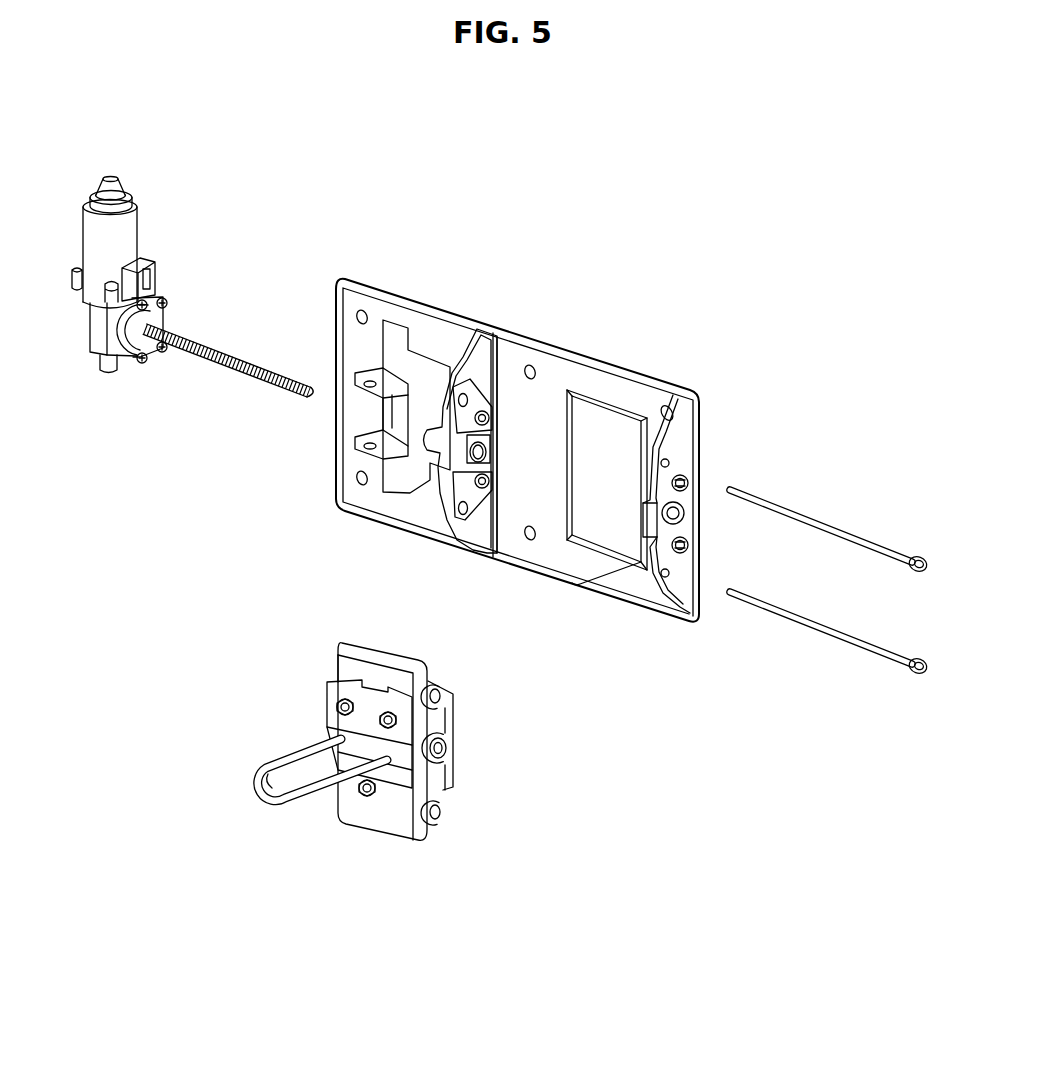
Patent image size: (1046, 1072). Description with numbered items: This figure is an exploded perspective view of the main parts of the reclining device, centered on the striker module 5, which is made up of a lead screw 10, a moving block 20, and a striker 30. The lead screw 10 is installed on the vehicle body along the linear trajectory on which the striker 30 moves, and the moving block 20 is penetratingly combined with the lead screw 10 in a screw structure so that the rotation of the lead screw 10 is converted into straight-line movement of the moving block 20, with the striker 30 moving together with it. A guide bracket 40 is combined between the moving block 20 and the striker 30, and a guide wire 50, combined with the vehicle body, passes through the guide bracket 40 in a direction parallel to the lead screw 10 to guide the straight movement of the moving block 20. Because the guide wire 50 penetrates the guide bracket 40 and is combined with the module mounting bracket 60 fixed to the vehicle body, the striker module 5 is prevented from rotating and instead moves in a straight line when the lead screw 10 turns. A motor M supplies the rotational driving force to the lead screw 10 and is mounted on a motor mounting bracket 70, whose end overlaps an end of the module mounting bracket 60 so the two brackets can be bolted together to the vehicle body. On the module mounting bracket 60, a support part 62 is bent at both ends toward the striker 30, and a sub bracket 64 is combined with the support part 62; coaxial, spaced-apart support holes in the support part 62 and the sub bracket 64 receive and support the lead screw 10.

The motor M is at (134, 222).
The lead screw 10 is at (205, 362).
The motor mounting bracket 70 is at (373, 300).
The module mounting bracket 60 is at (610, 383).
The support part 62 is at (473, 325).
The sub bracket 64 is at (462, 492).
The guide wire 50 is at (818, 628).
The striker module 5 is at (363, 829).
The moving block 20 is at (455, 718).
The striker 30 is at (281, 762).
The guide bracket 40 is at (439, 787).